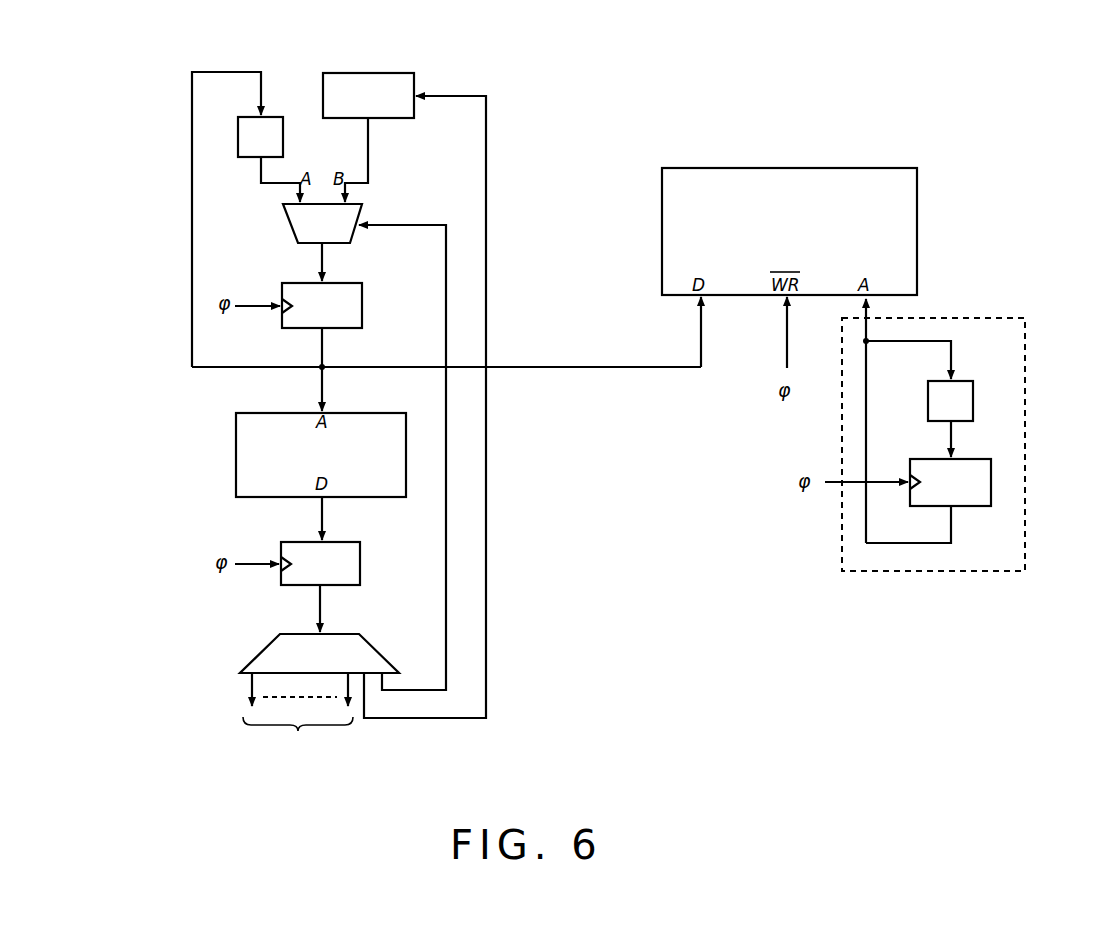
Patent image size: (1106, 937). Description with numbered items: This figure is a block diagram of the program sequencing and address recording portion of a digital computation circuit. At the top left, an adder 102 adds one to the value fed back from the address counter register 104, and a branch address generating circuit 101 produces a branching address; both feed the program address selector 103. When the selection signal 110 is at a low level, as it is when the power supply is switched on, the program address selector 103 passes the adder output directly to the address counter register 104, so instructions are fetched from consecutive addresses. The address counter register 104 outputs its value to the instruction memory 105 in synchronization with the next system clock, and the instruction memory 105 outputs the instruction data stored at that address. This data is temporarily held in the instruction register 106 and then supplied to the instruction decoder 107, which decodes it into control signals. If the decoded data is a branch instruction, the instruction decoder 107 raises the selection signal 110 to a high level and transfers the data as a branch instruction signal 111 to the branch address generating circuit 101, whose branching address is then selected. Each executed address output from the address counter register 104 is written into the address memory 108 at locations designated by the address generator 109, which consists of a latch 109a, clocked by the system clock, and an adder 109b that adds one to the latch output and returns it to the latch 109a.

The branch address generating circuit 101 is at (372, 73).
The adder 102 is at (238, 150).
The program address selector 103 is at (283, 232).
The address counter register 104 is at (282, 286).
The instruction memory 105 is at (236, 450).
The instruction register 106 is at (281, 548).
The instruction decoder 107 is at (260, 661).
The address memory 108 is at (792, 168).
The address generator 109 is at (974, 411).
The latch 109a is at (991, 478).
The adder 109b is at (973, 395).
The selection signal 110 is at (446, 583).
The branch instruction signal 111 is at (486, 640).